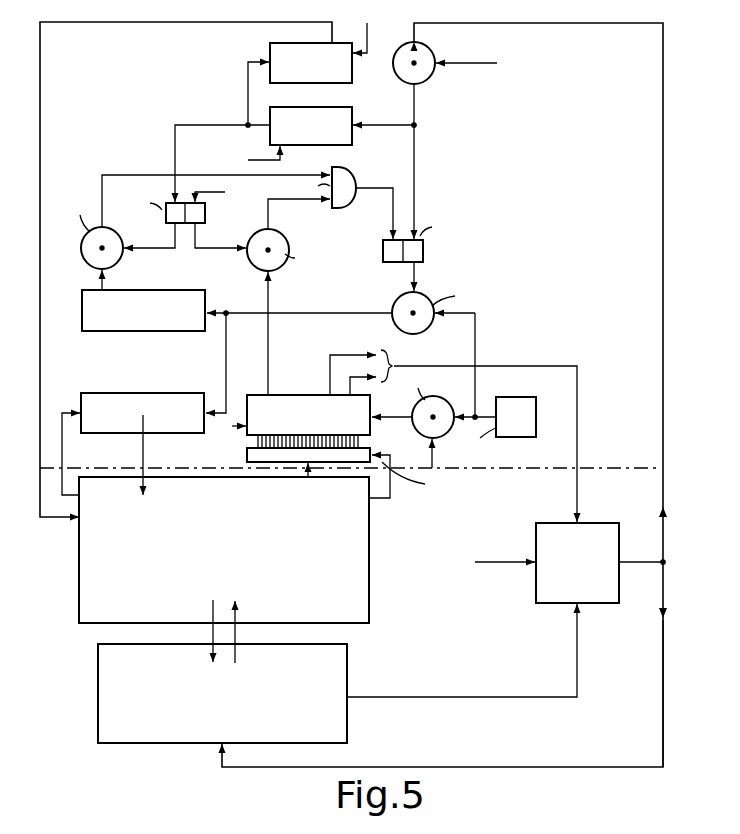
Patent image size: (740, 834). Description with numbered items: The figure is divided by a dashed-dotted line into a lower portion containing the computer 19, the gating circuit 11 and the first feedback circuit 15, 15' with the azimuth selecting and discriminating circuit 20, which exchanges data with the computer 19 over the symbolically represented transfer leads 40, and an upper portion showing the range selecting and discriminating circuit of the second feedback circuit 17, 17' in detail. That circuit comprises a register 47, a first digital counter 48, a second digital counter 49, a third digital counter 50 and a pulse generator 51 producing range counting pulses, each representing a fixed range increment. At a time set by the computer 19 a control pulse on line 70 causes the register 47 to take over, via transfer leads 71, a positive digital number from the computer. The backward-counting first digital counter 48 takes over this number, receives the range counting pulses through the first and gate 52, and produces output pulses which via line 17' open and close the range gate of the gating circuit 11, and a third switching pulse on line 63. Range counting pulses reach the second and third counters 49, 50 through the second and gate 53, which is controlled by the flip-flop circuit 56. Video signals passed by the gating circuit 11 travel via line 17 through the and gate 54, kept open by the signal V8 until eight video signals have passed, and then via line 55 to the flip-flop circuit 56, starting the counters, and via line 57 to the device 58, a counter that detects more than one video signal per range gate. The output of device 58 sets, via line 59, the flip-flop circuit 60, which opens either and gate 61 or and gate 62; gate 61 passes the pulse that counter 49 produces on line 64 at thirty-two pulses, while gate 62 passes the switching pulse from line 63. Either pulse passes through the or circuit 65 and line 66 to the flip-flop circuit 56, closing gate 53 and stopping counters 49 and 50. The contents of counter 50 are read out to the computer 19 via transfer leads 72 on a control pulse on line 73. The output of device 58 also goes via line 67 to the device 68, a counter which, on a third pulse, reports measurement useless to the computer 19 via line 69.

The line 69 is at (186, 260).
The second feedback circuit line 17 is at (444, 395).
The device 68 is at (344, 70).
The line 67 is at (245, 94).
The line 59 is at (222, 154).
The device 58 is at (344, 137).
The line 57 is at (384, 117).
The and gate 54 is at (430, 46).
The line 55 is at (426, 161).
The flip-flop circuit 56 is at (420, 237).
The second and gate 53 is at (419, 305).
The second digital counter 49 is at (174, 297).
The line 64 is at (113, 280).
The and gate 61 is at (116, 236).
The flip-flop circuit 60 is at (181, 215).
The and gate 62 is at (280, 237).
The or circuit 65 is at (347, 201).
The line 66 is at (374, 205).
The third digital counter 50 is at (170, 396).
The line 63 is at (268, 365).
The first digital counter 48 is at (283, 396).
The register 47 is at (247, 455).
The first and gate 52 is at (443, 408).
The pulse generator 51 is at (504, 402).
The second feedback circuit line 17' is at (498, 444).
The gating circuit 11 is at (618, 539).
The first feedback circuit line 15' is at (478, 650).
The first feedback circuit line 15 is at (653, 693).
The computer 19 is at (364, 566).
The line 73 is at (71, 454).
The transfer leads 72 is at (154, 455).
The transfer leads 71 is at (319, 484).
The line 70 is at (390, 480).
The lines 40 is at (224, 631).
The azimuth selecting and discriminating circuit 20 is at (351, 668).